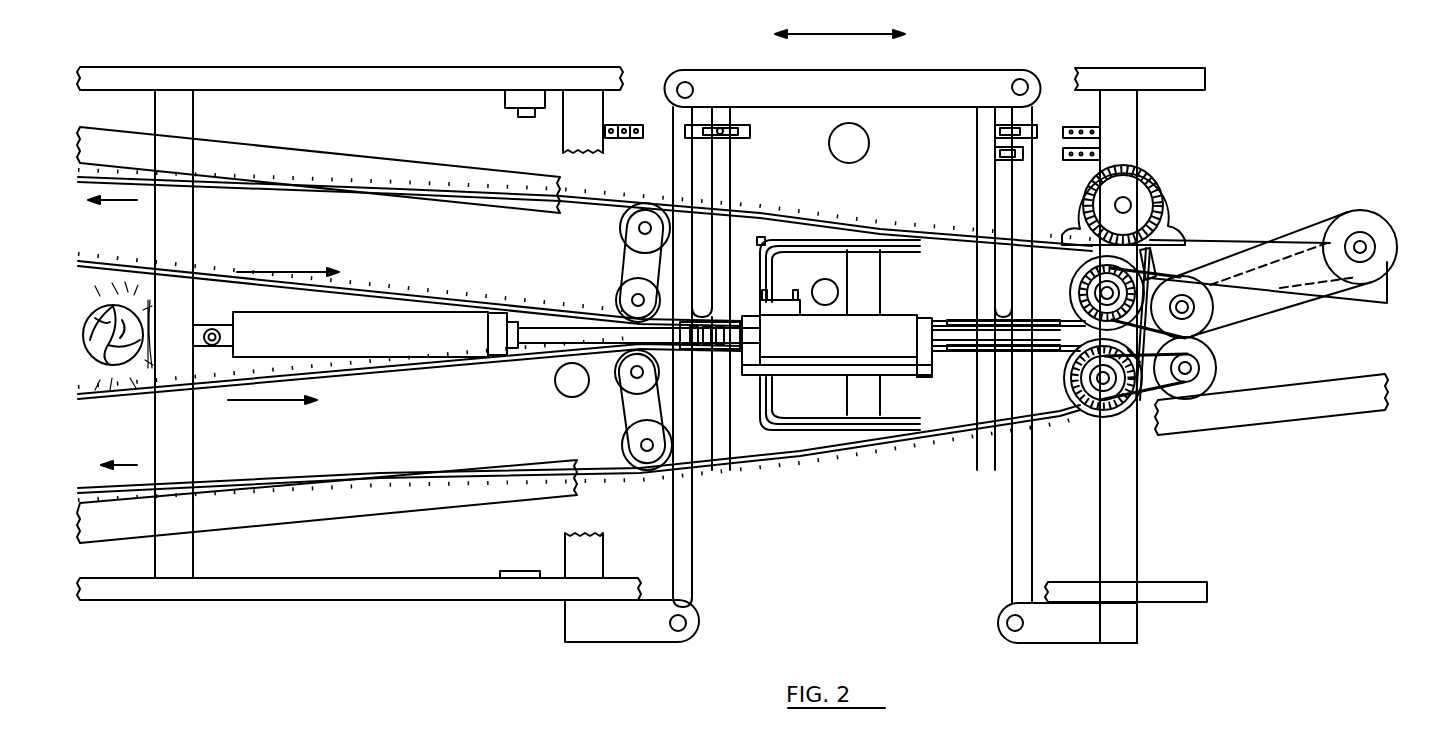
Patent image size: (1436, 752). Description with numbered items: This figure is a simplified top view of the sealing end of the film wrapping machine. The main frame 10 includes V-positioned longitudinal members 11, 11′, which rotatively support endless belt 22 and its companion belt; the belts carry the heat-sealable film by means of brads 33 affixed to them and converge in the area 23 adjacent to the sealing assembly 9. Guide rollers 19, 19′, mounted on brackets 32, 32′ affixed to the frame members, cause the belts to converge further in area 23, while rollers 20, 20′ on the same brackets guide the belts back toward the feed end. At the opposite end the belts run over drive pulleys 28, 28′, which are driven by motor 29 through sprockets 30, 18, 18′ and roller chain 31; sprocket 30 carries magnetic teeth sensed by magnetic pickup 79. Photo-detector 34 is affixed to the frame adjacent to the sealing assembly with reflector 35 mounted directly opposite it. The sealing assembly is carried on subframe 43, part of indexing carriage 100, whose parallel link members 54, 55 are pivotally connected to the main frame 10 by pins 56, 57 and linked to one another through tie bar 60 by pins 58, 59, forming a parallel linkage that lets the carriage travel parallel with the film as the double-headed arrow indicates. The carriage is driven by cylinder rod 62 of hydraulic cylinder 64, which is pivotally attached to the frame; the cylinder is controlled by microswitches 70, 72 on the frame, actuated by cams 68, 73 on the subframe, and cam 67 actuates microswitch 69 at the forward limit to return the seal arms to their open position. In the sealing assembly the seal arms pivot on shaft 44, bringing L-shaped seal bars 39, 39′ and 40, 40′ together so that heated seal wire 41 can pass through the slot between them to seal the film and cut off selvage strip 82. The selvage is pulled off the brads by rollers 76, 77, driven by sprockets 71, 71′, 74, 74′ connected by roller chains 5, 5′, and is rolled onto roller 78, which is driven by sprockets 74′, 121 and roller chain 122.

The main frame 10 is at (378, 67).
The photo-detector 34 is at (505, 97).
The reflector 35 is at (505, 572).
The microswitch 72 is at (609, 127).
The tie bar 60 is at (826, 72).
The pin 58 is at (685, 82).
The pin 59 is at (1026, 80).
The subframe 43 is at (723, 180).
The parallel link member 54 is at (695, 540).
The parallel link member 55 is at (1012, 512).
The pin 56 is at (688, 623).
The pin 57 is at (1007, 623).
The cam 73 is at (752, 131).
The cam 67 is at (1037, 131).
The cam 68 is at (1025, 153).
The microswitch 69 is at (1078, 127).
The microswitch 70 is at (1085, 160).
The indexing carriage 100 is at (852, 143).
The sealing assembly 9 is at (825, 292).
The converging area 23 is at (572, 380).
The longitudinal frame member 11′ is at (445, 205).
The longitudinal frame member 11 is at (460, 468).
The brads 33 is at (116, 262).
The hydraulic cylinder 64 is at (313, 350).
The cylinder rod 62 is at (542, 328).
The endless belt 22 is at (505, 358).
The shaft 44 is at (940, 330).
The seal wire 41 is at (760, 243).
The seal bar 39′ is at (812, 240).
The seal bar 40′ is at (780, 290).
The seal bar 39 is at (762, 412).
The seal bar 40 is at (780, 415).
The bracket 32′ is at (625, 265).
The roller 20′ is at (620, 225).
The guide roller 19′ is at (618, 298).
The bracket 32 is at (630, 428).
The guide roller 19 is at (615, 392).
The roller 20 is at (624, 447).
The motor 29 is at (1168, 206).
The sprocket 30 is at (1145, 178).
The sprocket 71′ is at (1071, 293).
The drive pulley 28′ is at (1076, 278).
The sprocket 18′ is at (1080, 312).
The sprocket 71 is at (1110, 398).
The drive pulley 28 is at (1071, 388).
The sprocket 18 is at (1095, 405).
The magnetic pickup 79 is at (1153, 262).
The roller chain 31 is at (1148, 349).
The roller chain 5′ is at (1181, 283).
The sprocket 74′ is at (1215, 318).
The roller 76 is at (1205, 326).
The selvage strip 82 is at (1298, 303).
The roller chain 122 is at (1318, 243).
The roller 78 is at (1352, 212).
The sprocket 121 is at (1375, 235).
The sprocket 74 is at (1212, 381).
The roller 77 is at (1218, 367).
The roller chain 5 is at (1172, 418).